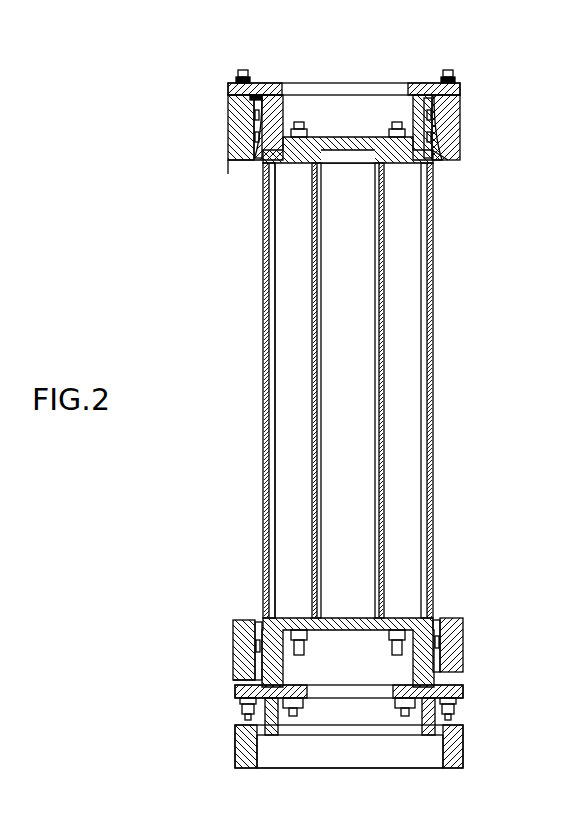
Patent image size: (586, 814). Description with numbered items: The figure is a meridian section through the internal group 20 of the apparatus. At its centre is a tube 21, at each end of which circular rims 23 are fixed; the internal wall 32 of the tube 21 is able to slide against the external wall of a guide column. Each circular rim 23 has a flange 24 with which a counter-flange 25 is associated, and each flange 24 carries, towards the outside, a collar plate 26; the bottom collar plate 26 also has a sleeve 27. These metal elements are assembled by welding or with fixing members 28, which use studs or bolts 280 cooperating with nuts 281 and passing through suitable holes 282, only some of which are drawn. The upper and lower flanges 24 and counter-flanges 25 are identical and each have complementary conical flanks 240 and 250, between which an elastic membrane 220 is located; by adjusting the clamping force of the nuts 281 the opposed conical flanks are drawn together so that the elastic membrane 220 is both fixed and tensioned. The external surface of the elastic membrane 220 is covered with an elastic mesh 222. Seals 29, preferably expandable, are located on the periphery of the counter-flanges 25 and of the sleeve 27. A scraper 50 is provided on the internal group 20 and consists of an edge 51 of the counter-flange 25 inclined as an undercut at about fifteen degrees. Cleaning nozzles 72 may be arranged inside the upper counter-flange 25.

The internal group 20 is at (196, 73).
The tube 21 is at (385, 512).
The circular rims 23 is at (284, 168).
The flange 24 is at (283, 96).
The counter-flange 25 is at (455, 130).
The collar plate 26 is at (456, 84).
The sleeve 27 is at (258, 736).
The fixing members 28 is at (247, 68).
The seals 29 is at (462, 110).
The internal wall of the tube 32 is at (323, 552).
The scraper 50 is at (226, 167).
The edge of the counter-flange 51 is at (231, 170).
The nozzles 72 is at (250, 97).
The elastic membrane 220 is at (435, 388).
The elastic mesh 222 is at (435, 307).
The conical flank of the flange 240 is at (416, 95).
The conical flank of the counter-flange 250 is at (445, 160).
The studs or bolts 280 is at (238, 680).
The nuts 281 is at (240, 715).
The holes 282 is at (236, 703).